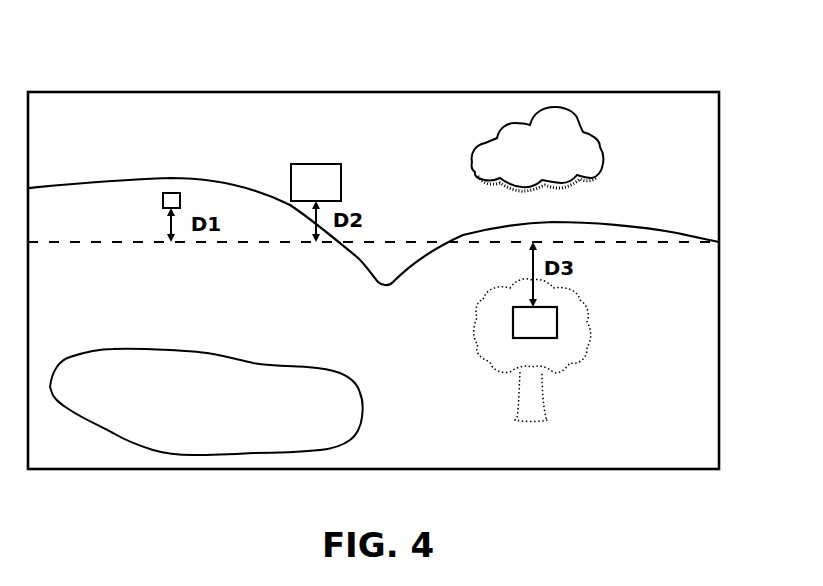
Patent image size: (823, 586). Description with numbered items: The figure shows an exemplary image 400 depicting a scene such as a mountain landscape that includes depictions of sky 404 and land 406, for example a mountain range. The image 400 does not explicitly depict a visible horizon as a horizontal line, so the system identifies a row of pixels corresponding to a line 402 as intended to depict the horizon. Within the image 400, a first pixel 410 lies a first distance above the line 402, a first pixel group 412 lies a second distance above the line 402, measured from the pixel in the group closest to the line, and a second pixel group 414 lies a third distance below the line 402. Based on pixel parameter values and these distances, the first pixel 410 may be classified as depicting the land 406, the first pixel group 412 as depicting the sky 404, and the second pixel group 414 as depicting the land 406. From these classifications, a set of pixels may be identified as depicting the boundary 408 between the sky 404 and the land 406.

The image 400 is at (640, 68).
The line 402 is at (565, 240).
The sky 404 is at (629, 155).
The land 406 is at (111, 302).
The boundary 408 is at (62, 180).
The first pixel 410 is at (181, 192).
The first pixel group 412 is at (342, 183).
The second pixel group 414 is at (557, 320).